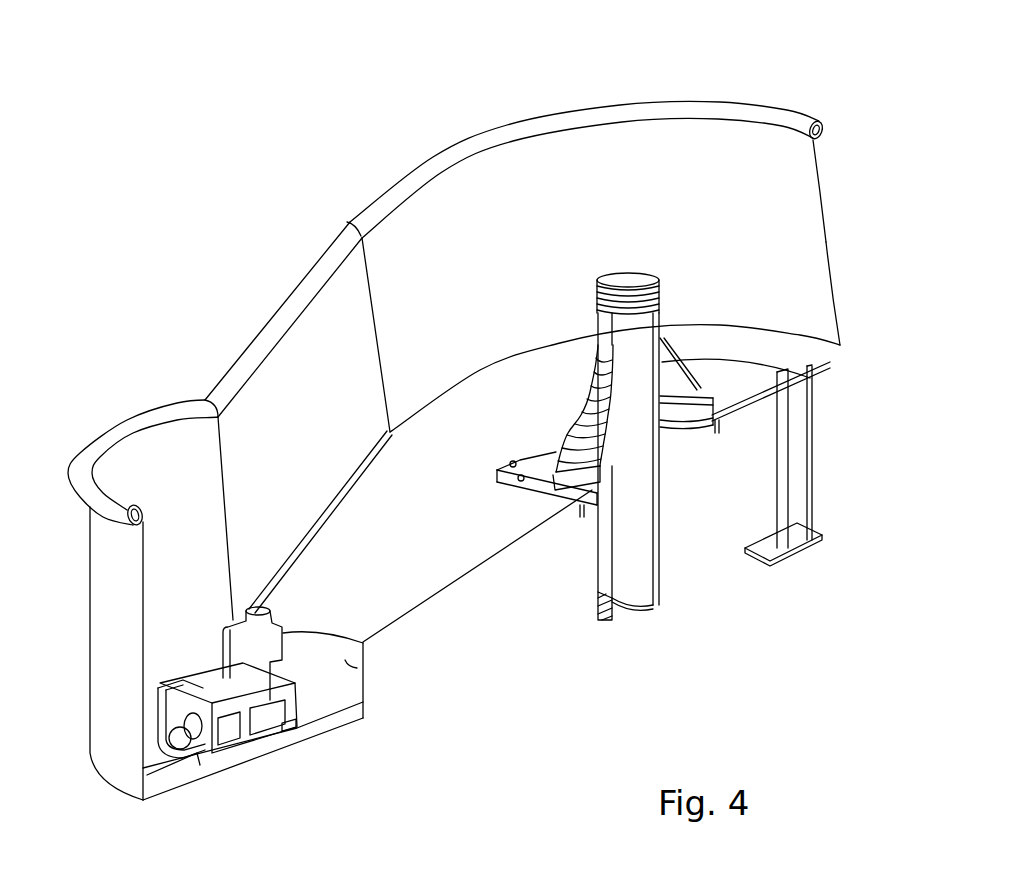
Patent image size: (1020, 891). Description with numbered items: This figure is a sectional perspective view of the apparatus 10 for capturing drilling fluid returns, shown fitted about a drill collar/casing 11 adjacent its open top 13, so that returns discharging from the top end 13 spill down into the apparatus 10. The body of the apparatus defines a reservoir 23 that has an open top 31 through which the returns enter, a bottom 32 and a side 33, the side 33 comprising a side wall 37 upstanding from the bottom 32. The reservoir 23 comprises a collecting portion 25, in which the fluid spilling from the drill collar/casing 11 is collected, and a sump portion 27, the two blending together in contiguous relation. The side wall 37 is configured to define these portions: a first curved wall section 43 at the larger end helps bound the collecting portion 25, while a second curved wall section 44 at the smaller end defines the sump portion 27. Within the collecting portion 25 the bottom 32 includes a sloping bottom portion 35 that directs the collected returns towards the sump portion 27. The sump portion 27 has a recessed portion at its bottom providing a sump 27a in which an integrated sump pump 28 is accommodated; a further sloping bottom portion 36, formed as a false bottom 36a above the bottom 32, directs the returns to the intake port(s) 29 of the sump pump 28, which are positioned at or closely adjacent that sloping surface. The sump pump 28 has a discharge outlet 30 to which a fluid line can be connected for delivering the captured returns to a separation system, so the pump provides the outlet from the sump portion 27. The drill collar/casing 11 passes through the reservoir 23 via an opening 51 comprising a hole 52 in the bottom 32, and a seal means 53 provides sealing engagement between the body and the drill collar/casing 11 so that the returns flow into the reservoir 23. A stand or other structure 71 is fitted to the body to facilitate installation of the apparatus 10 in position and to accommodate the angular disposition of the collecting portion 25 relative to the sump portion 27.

The apparatus 10 is at (262, 254).
The drill collar/casing 11 is at (594, 300).
The open top 13 is at (638, 276).
The reservoir 23 is at (386, 258).
The collecting portion 25 is at (760, 157).
The sump portion 27 is at (153, 453).
The sump 27a is at (362, 672).
The sump pump 28 is at (292, 697).
The intake port 29 is at (302, 730).
The discharge outlet 30 is at (157, 710).
The open top 31 is at (425, 217).
The bottom 32 is at (253, 760).
The side 33 is at (823, 200).
The sloping bottom portion 35 is at (450, 570).
The sloping bottom portion 36 is at (167, 772).
The false bottom 36a is at (300, 727).
The side wall 37 is at (832, 267).
The first curved wall section 43 is at (818, 160).
The second curved wall section 44 is at (110, 620).
The opening 51 is at (788, 415).
The hole 52 is at (660, 460).
The seal means 53 is at (810, 372).
The stand 71 is at (798, 478).